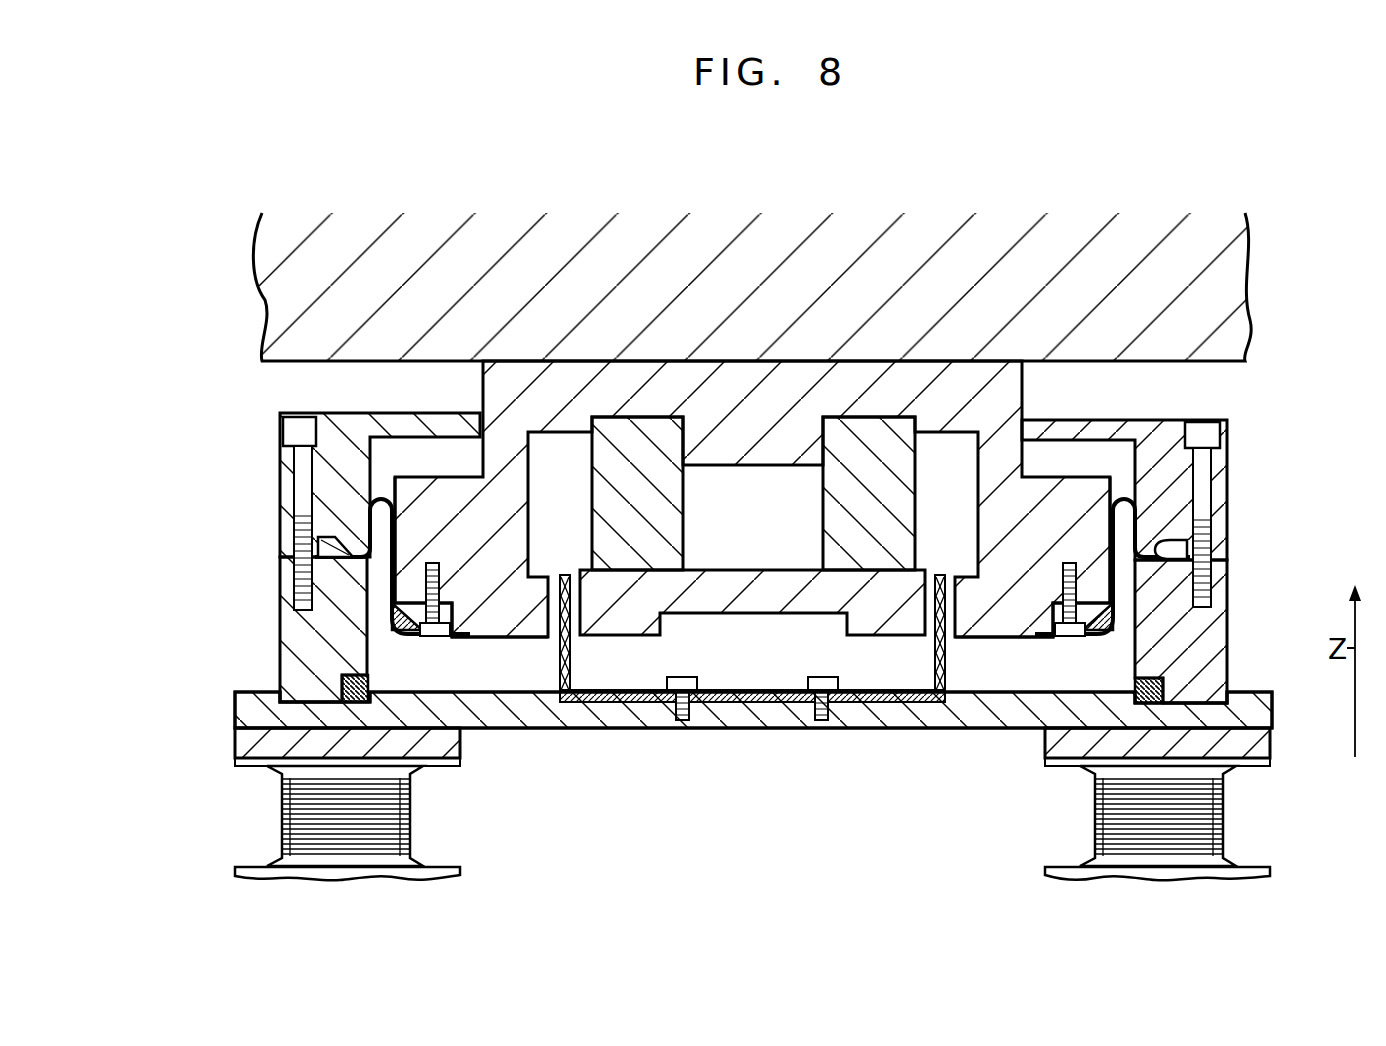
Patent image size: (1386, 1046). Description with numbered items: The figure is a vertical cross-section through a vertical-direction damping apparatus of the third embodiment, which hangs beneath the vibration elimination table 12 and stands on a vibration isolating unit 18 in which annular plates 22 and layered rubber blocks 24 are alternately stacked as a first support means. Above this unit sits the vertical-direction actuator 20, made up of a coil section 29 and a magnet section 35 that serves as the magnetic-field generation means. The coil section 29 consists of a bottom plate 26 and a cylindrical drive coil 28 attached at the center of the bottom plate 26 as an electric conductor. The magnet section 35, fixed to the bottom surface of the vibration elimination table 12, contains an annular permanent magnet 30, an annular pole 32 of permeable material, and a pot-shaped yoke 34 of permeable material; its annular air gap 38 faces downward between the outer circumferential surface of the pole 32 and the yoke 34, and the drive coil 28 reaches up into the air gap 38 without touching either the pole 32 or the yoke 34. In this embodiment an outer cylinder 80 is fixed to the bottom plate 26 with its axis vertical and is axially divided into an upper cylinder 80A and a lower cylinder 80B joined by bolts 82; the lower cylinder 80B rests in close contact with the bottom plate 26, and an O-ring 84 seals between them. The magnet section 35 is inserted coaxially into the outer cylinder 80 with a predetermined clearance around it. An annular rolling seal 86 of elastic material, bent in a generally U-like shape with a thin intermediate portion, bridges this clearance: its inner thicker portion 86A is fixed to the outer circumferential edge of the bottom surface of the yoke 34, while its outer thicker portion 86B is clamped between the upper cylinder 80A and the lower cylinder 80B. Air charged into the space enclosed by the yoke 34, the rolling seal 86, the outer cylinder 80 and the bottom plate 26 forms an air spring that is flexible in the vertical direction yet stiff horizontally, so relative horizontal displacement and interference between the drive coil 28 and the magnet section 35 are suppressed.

The vibration elimination table 12 is at (298, 364).
The vibration isolating unit 18 is at (166, 810).
The vertical-direction actuator 20 is at (258, 523).
The annular plates 22 is at (233, 740).
The layered rubber blocks 24 is at (282, 805).
The bottom plate 26 is at (1273, 712).
The drive coil 28 is at (933, 652).
The coil section 29 is at (226, 715).
The annular permanent magnet 30 is at (822, 497).
The annular pole 32 is at (623, 638).
The pot-shaped yoke 34 is at (484, 638).
The magnet section 35 is at (472, 383).
The air gap 38 is at (953, 645).
The outer cylinder 80 is at (1198, 538).
The upper cylinder 80A is at (1228, 497).
The lower cylinder 80B is at (1227, 607).
The bolts 82 is at (1196, 436).
The O-ring 84 is at (1134, 688).
The annular rolling seal 86 is at (334, 568).
The inner thicker portion 86A is at (400, 625).
The outer thicker portion 86B is at (333, 552).